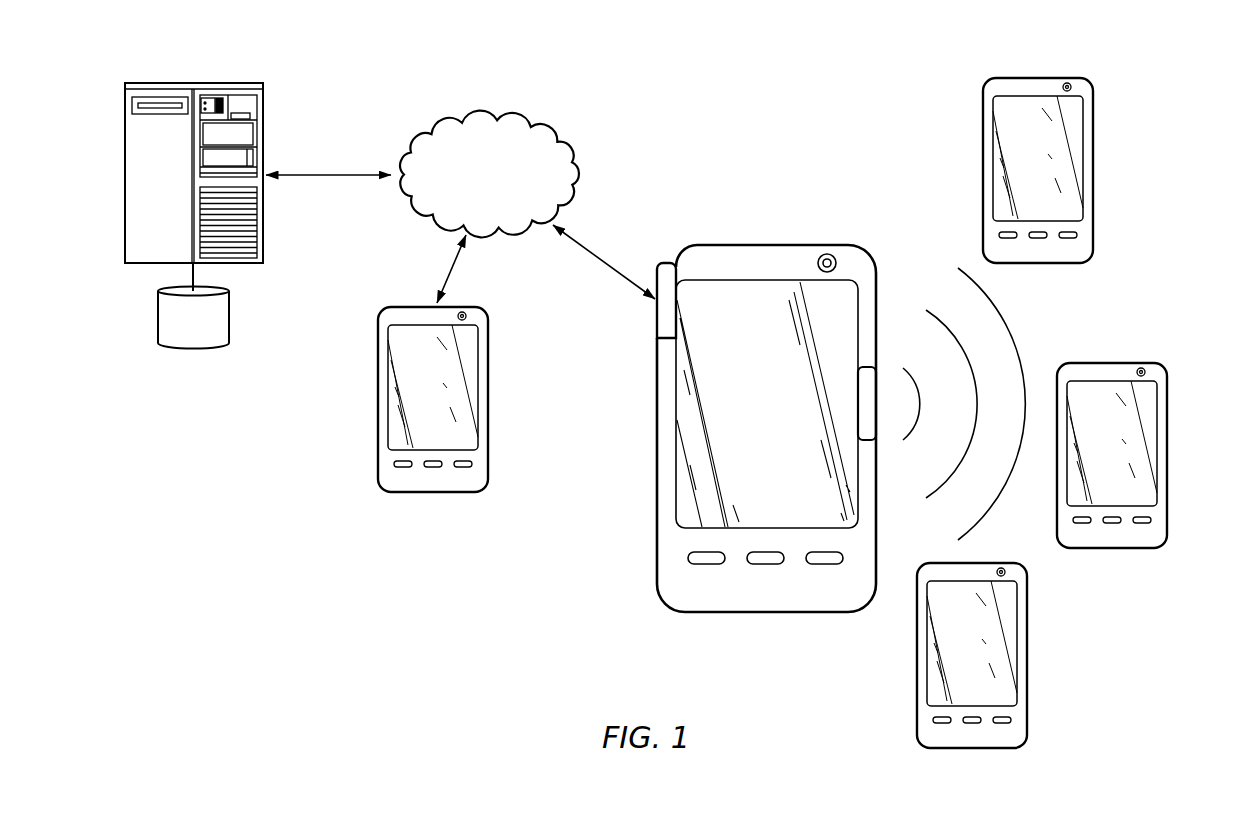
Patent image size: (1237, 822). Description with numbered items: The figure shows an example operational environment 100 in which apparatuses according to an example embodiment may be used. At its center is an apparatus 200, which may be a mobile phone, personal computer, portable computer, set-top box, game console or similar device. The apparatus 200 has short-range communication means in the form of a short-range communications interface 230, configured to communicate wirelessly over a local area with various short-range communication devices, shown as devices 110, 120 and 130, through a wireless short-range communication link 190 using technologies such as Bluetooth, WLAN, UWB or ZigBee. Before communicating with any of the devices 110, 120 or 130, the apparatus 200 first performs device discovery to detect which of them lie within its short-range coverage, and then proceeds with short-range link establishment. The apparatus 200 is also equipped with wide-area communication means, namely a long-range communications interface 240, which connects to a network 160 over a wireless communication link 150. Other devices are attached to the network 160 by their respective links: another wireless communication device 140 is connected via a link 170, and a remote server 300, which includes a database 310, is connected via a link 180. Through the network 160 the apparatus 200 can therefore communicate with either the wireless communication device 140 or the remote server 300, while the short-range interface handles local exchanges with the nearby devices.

The operational environment 100 is at (882, 58).
The short-range communication device 110 is at (1098, 147).
The short-range communication device 120 is at (1171, 479).
The short-range communication device 130 is at (1031, 678).
The wireless communication device 140 is at (374, 425).
The wireless communication link 150 is at (606, 259).
The network 160 is at (472, 186).
The link 170 is at (447, 266).
The link 180 is at (331, 172).
The wireless short-range communication link 190 is at (1015, 334).
The apparatus 200 is at (795, 242).
The short-range communications interface 230 is at (861, 388).
The long-range communications interface 240 is at (661, 323).
The remote server 300 is at (217, 79).
The database 310 is at (210, 330).